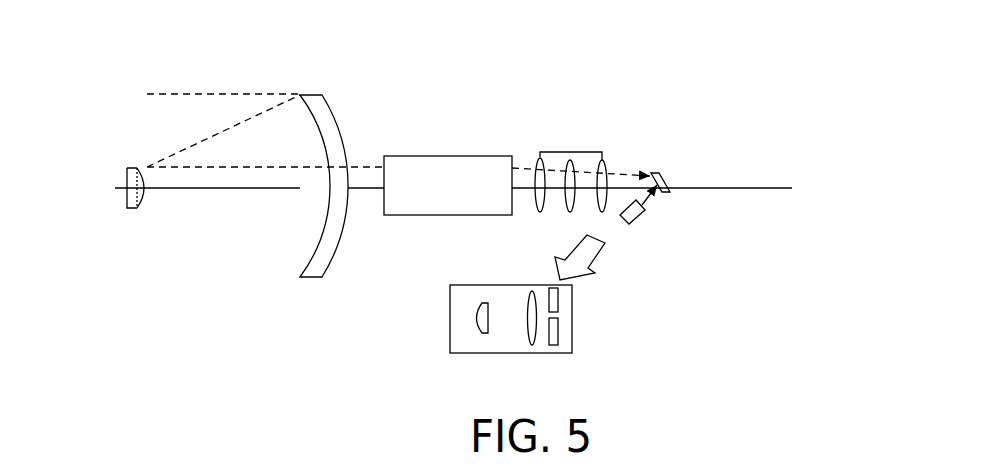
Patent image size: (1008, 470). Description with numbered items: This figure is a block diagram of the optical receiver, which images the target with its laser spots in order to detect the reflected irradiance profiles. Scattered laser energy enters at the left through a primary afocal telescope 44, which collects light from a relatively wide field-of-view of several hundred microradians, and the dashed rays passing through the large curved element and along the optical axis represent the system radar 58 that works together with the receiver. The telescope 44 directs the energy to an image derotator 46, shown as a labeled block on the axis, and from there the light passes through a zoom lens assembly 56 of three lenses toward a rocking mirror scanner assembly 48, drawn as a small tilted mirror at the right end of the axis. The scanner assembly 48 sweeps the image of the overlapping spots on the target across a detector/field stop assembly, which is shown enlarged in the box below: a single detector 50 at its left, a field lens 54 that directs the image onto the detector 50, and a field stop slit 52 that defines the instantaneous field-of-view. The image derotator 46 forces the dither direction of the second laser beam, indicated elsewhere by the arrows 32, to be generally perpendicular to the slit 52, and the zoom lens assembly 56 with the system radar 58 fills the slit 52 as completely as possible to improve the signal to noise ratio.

The arrows 32 is at (802, 105).
The primary afocal telescope 44 is at (226, 272).
The image derotator 46 is at (473, 156).
The rocking mirror scanner assembly 48 is at (709, 142).
The single detector 50 is at (475, 310).
The field stop slit 52 is at (560, 337).
The field lens 54 is at (513, 285).
The zoom lens assembly 56 is at (616, 102).
The system radar 58 is at (357, 162).